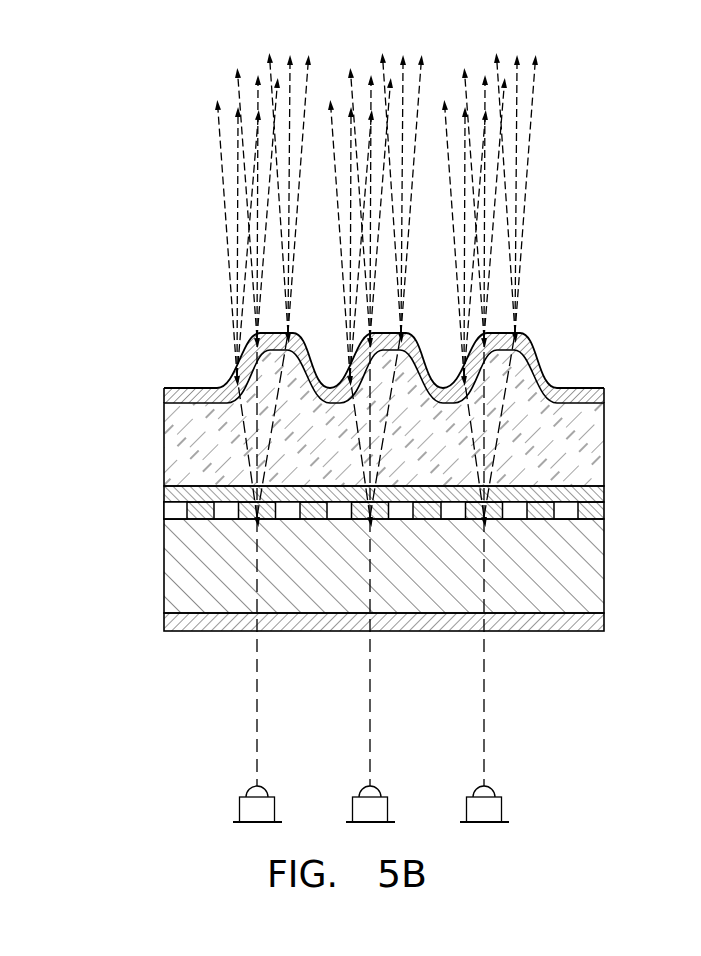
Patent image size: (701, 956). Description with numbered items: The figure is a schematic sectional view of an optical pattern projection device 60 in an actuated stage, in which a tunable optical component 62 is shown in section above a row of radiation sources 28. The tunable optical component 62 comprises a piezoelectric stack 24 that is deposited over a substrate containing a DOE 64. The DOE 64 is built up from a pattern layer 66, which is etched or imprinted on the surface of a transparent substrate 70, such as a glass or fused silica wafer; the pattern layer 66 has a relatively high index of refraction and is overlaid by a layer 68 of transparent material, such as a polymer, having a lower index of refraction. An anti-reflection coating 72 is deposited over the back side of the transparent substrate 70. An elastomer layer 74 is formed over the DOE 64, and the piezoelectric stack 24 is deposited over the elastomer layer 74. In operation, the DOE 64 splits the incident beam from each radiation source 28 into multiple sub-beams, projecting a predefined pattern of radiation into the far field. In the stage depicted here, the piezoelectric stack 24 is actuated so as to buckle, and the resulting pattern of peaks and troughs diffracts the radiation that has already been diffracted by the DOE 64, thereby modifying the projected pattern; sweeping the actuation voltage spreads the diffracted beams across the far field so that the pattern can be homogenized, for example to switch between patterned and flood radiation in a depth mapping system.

The optical pattern projection device 60 is at (160, 284).
The piezoelectric stack 24 is at (582, 396).
The elastomer layer 74 is at (177, 453).
The layer of transparent material 68 is at (173, 492).
The pattern layer 66 is at (173, 510).
The DOE 64 is at (376, 496).
The transparent substrate 70 is at (177, 573).
The anti-reflection coating 72 is at (175, 622).
The tunable optical component 62 is at (400, 482).
The radiation sources 28 is at (269, 805).